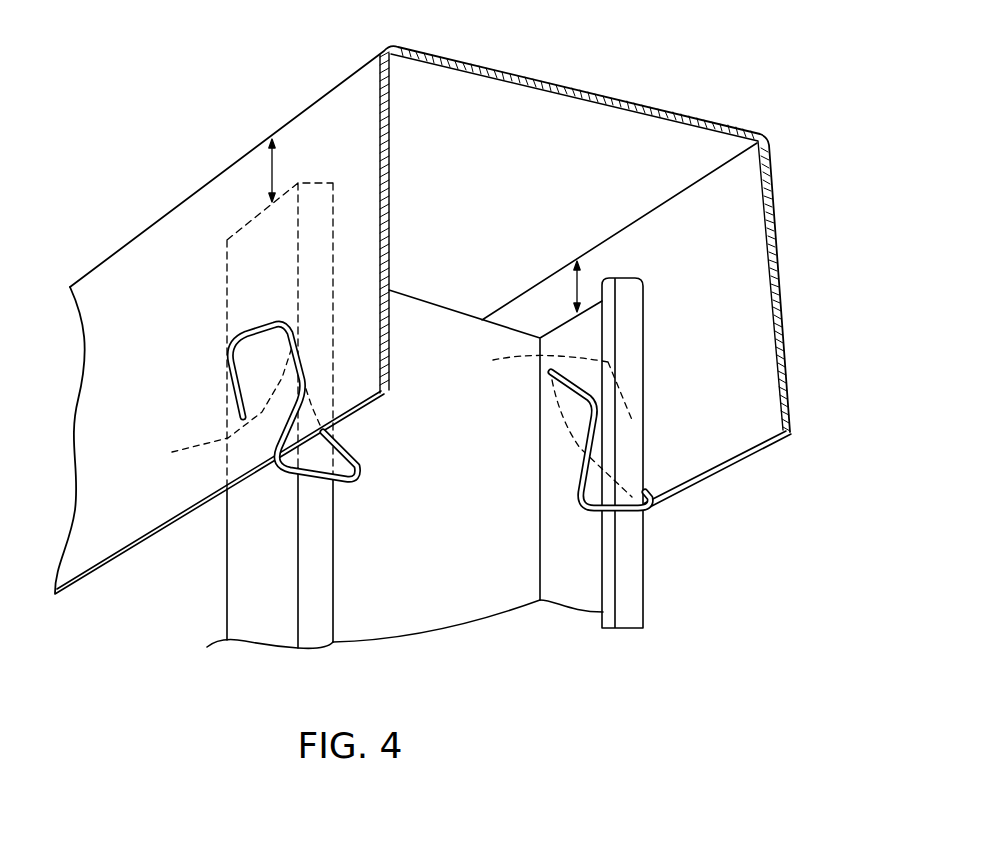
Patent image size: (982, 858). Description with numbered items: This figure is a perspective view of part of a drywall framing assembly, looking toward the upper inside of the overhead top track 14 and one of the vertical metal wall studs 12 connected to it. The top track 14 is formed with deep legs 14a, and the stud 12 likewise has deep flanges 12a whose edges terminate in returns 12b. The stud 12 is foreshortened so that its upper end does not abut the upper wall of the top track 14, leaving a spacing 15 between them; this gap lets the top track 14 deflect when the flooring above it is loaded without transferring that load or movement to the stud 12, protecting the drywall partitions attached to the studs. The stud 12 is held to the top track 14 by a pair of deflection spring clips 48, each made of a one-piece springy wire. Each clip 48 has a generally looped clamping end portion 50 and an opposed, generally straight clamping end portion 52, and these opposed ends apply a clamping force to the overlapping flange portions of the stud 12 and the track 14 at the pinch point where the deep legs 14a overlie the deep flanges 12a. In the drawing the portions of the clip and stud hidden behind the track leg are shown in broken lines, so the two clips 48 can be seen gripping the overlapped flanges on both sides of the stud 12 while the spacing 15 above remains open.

The top track 14 is at (572, 86).
The deep legs 14a is at (389, 211).
The spacing 15 is at (274, 174).
The metal wall studs 12 is at (250, 560).
The deep flanges 12a is at (337, 573).
The returns 12b is at (610, 556).
The deflection spring clip 48 is at (360, 448).
The looped clamping end portion 50 is at (250, 334).
The straight clamping end portion 52 is at (547, 410).